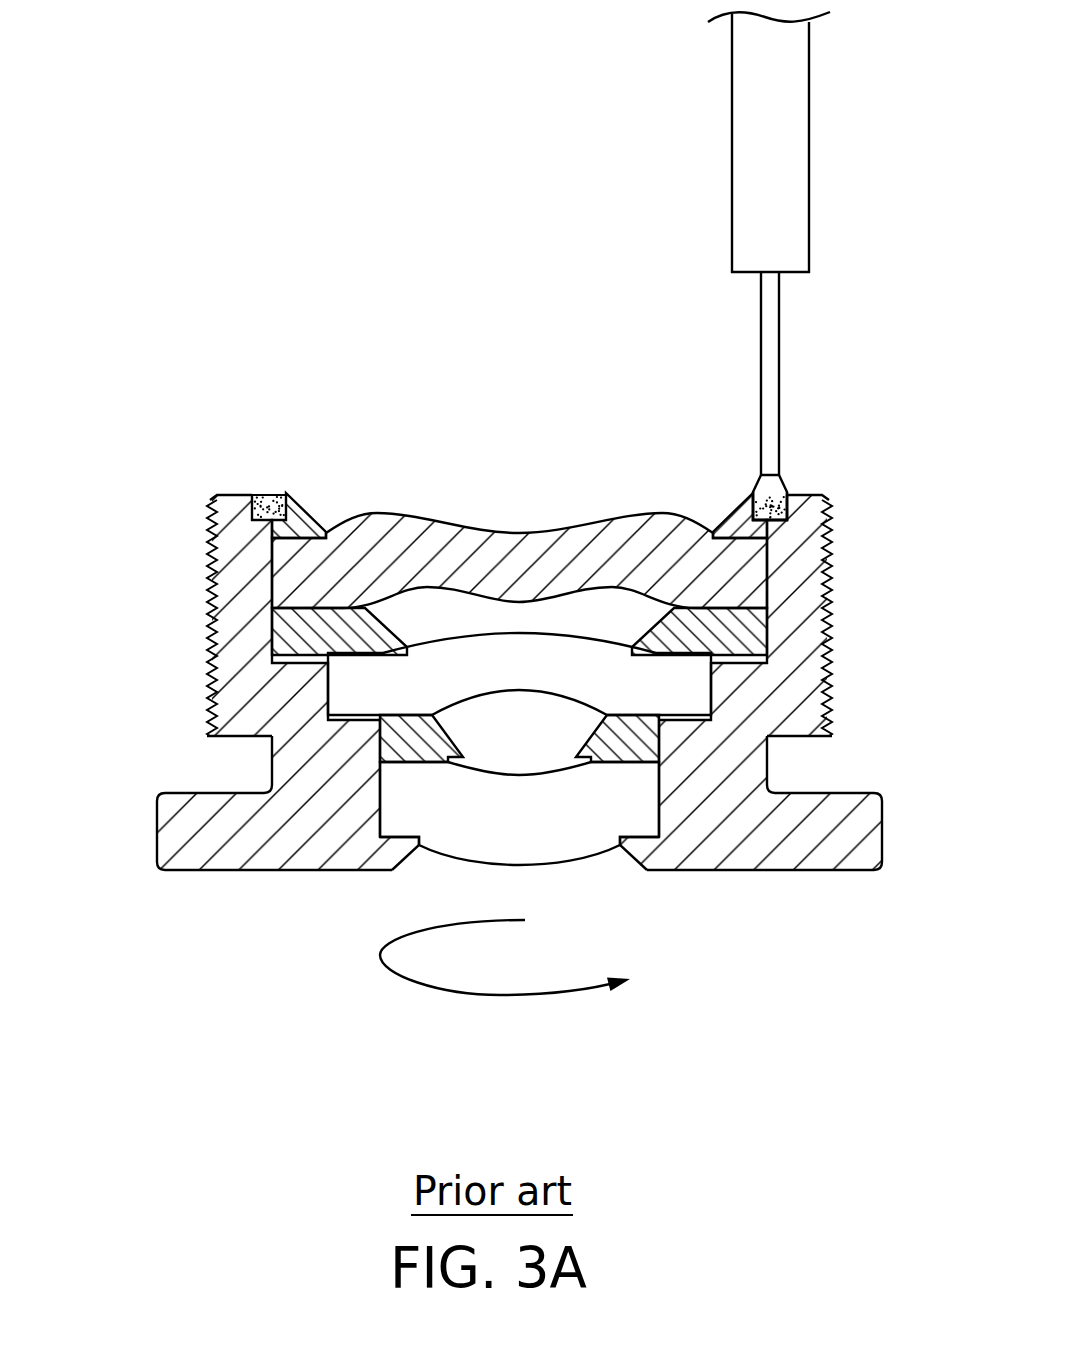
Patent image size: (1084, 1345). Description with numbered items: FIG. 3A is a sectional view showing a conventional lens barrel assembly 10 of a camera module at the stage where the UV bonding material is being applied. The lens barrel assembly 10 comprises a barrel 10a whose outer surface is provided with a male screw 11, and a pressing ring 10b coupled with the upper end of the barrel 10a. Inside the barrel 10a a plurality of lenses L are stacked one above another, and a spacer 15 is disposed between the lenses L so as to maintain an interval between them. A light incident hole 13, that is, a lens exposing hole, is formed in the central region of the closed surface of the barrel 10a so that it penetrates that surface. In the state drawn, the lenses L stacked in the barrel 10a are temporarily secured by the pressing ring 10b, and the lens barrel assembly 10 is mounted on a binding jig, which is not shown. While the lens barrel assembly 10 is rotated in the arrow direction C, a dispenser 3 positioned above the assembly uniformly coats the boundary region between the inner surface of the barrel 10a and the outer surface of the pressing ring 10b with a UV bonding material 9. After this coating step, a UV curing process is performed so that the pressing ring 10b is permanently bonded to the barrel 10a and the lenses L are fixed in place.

The dispenser 3 is at (757, 168).
The UV bonding material 9 is at (783, 503).
The lens barrel assembly 10 is at (505, 655).
The barrel 10a is at (242, 605).
The pressing ring 10b is at (253, 537).
The male screw 11 is at (203, 700).
The light incident hole 13 is at (410, 858).
The spacer 15 is at (650, 747).
The lens L is at (697, 685).
The arrow direction C is at (505, 947).